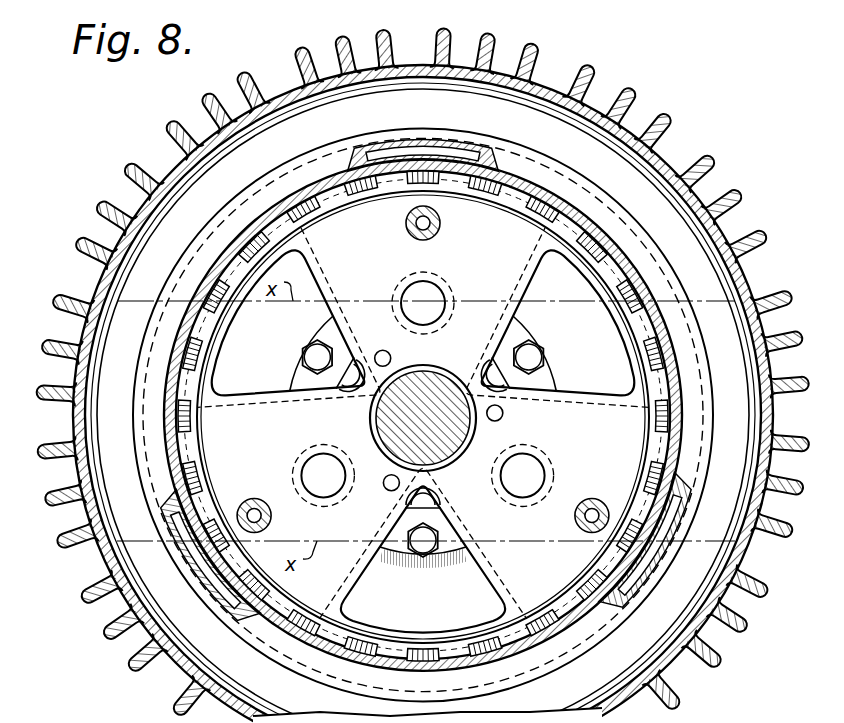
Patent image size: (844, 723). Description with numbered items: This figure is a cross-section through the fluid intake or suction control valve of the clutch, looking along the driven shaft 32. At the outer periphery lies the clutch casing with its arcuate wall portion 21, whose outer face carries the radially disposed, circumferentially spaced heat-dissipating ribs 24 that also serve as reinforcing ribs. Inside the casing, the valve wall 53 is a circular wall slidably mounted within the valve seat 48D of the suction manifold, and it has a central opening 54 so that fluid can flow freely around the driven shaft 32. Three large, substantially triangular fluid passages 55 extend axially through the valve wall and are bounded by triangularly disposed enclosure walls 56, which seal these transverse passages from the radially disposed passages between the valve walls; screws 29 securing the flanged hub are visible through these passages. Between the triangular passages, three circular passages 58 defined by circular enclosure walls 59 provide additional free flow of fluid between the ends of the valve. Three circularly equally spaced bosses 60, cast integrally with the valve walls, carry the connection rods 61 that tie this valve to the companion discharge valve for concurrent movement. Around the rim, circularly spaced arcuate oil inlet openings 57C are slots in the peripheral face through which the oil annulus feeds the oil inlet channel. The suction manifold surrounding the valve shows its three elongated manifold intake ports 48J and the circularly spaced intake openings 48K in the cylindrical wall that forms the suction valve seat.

The arcuate wall portion 21 is at (668, 152).
The ribs 24 is at (632, 104).
The screws 29 is at (317, 358).
The driven shaft 32 is at (405, 432).
The valve seat 48D is at (522, 183).
The manifold intake ports 48J is at (466, 156).
The intake openings 48K is at (690, 397).
The wall 53 is at (520, 588).
The central opening 54 is at (370, 427).
The fluid passages 55 is at (313, 292).
The enclosure walls 56 is at (350, 306).
The oil inlet openings 57C is at (243, 247).
The circular passages 58 is at (432, 297).
The circular enclosure walls 59 is at (454, 277).
The bosses 60 is at (406, 222).
The connection rods 61 is at (420, 224).